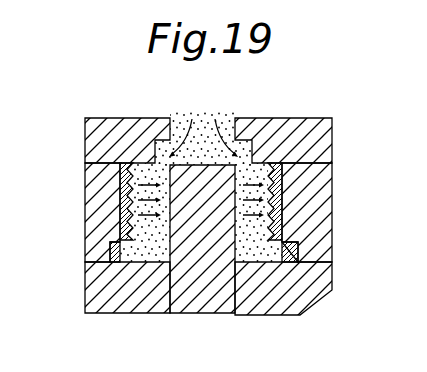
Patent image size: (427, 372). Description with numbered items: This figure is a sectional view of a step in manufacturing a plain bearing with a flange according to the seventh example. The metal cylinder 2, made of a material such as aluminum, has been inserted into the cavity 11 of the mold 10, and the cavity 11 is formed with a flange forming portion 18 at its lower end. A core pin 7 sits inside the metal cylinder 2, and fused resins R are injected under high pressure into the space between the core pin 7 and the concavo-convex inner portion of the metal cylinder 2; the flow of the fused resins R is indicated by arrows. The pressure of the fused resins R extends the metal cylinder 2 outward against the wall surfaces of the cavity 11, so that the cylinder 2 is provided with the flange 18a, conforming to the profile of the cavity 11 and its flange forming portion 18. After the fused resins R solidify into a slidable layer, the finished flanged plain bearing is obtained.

The metal cylinder 2 is at (118, 201).
The core pin 7 is at (205, 295).
The mold 10 is at (332, 250).
The cavity 11 is at (142, 246).
The flange forming portion 18 is at (112, 244).
The flange 18a is at (107, 255).
The fused resins R is at (261, 172).